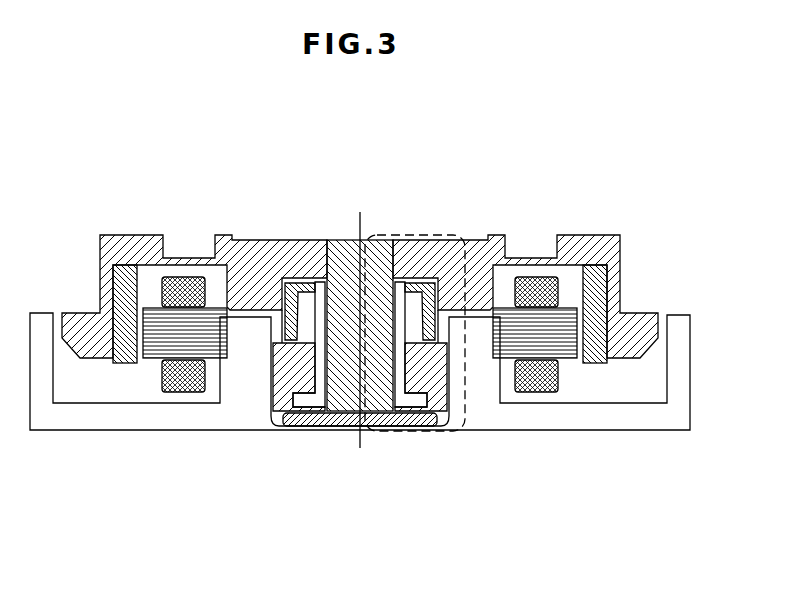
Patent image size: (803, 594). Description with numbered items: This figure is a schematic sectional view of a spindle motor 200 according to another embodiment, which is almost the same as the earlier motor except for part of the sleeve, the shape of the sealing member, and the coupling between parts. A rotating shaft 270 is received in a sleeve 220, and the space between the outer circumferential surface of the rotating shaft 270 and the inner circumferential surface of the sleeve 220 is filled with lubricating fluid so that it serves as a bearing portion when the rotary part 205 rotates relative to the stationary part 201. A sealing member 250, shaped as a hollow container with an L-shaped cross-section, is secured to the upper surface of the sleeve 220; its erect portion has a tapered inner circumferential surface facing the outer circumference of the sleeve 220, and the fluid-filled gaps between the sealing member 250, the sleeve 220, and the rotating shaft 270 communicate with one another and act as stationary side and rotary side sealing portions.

The spindle motor 200 is at (132, 115).
The stationary part 201 is at (57, 493).
The rotary part 205 is at (615, 178).
The sleeve 220 is at (277, 432).
The sealing member 250 is at (279, 336).
The rotating shaft 270 is at (352, 232).